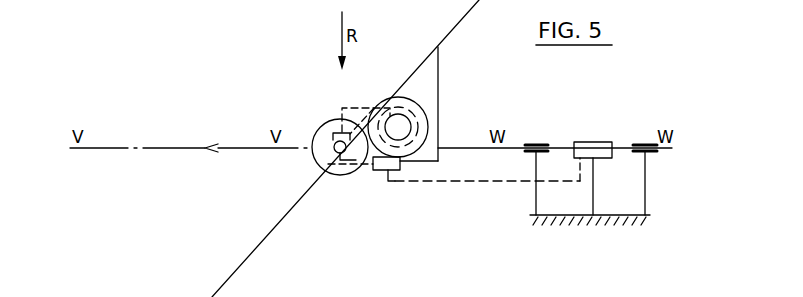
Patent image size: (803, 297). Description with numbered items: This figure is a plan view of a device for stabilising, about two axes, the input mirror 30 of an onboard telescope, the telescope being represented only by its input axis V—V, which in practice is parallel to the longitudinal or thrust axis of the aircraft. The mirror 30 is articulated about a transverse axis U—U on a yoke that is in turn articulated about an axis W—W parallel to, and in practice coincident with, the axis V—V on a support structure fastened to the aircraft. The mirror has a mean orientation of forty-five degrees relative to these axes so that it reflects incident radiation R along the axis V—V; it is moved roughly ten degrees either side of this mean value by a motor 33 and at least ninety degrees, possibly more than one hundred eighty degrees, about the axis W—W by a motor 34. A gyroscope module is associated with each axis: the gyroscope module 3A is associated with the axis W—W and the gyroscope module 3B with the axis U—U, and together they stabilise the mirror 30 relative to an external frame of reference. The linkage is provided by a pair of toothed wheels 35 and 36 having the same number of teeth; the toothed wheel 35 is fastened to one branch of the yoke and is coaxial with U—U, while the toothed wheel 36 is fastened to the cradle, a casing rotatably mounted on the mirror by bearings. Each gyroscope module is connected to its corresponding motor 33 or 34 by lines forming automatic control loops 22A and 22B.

The input mirror 30 is at (222, 287).
The motor 33 is at (318, 160).
The toothed wheel 35 is at (325, 126).
The toothed wheel 36 is at (413, 99).
The gyroscope module 3B is at (406, 118).
The automatic control loop 22B is at (368, 107).
The gyroscope module 3A is at (377, 176).
The automatic control loop 22A is at (490, 183).
The motor 34 is at (596, 142).